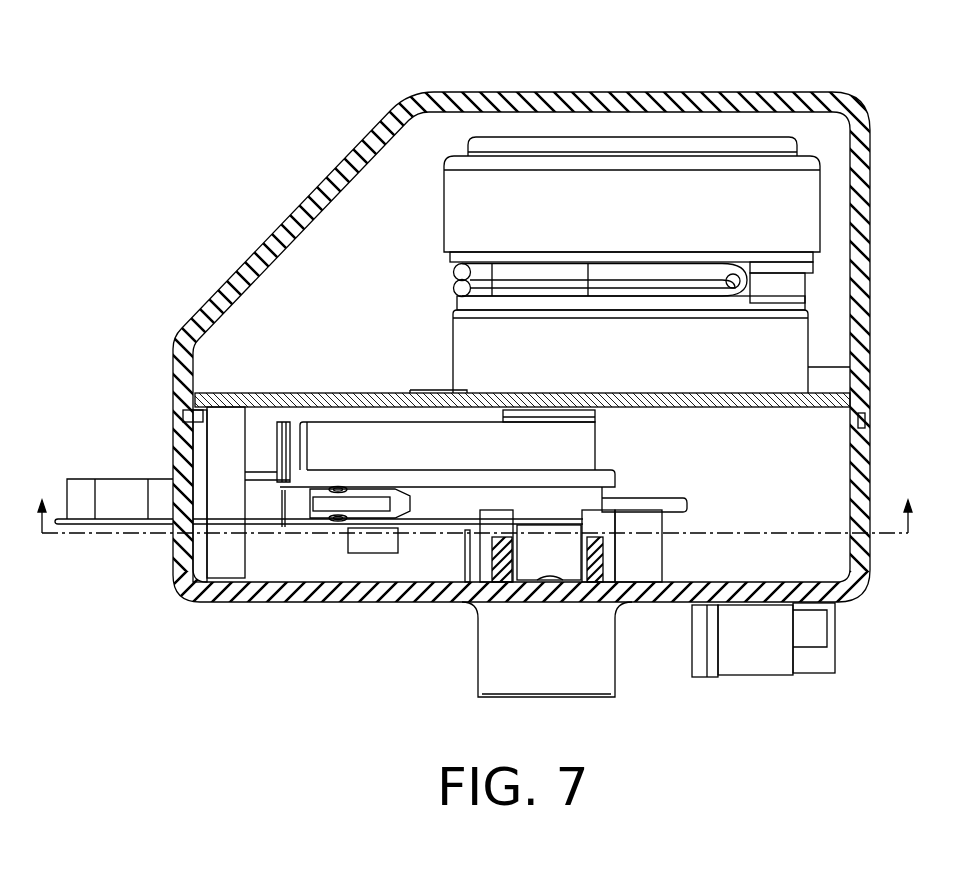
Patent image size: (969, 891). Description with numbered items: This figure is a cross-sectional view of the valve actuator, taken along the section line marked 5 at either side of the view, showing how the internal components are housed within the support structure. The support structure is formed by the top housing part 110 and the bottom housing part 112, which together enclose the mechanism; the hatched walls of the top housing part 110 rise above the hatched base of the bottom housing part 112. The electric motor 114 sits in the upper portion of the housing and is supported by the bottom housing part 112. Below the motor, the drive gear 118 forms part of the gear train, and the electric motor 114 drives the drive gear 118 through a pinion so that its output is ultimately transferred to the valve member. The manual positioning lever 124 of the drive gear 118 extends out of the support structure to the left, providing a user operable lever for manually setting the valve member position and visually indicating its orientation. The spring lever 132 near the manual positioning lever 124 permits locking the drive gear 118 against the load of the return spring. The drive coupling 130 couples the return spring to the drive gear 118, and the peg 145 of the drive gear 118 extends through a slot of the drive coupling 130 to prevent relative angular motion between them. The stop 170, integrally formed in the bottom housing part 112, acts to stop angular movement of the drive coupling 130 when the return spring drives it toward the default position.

The top housing part 110 is at (265, 250).
The bottom housing part 112 is at (200, 600).
The electric motor 114 is at (695, 185).
The drive gear 118 is at (295, 450).
The manual positioning lever 124 is at (123, 513).
The drive coupling 130 is at (415, 512).
The spring lever 132 is at (82, 517).
The peg 145 is at (370, 545).
The stop 170 is at (598, 527).
The section line 5- 5 is at (475, 503).